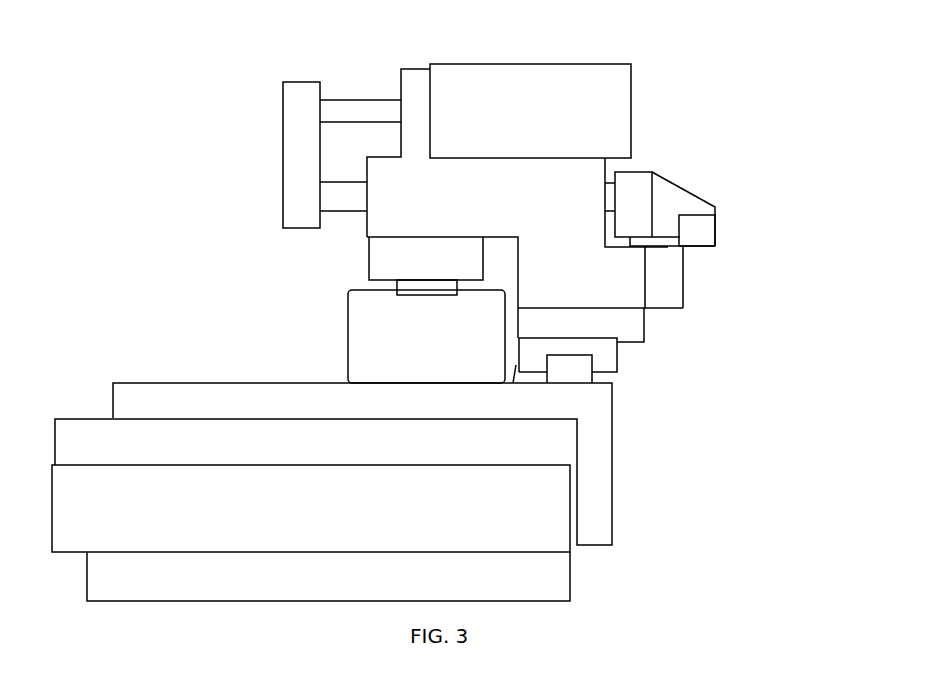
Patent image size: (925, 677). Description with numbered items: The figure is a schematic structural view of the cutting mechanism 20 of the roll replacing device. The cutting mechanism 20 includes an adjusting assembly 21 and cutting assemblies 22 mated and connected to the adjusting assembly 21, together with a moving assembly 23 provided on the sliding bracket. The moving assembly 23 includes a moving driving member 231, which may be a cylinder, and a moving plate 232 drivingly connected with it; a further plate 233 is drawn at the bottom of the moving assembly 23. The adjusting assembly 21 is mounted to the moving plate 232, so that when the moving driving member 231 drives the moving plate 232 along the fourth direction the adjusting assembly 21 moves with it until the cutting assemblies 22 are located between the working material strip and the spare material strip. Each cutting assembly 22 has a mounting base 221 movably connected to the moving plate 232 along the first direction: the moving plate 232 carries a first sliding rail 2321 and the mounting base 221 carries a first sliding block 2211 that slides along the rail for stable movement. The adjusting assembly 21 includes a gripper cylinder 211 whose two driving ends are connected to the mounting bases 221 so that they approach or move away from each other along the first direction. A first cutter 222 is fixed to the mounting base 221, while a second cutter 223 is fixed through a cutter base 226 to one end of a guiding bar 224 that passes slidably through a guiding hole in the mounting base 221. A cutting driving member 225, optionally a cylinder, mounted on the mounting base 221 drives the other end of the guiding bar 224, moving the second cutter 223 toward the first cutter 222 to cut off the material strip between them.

The cutting mechanism 20 is at (134, 84).
The adjusting assembly 21 is at (337, 307).
The gripper cylinder 211 is at (363, 330).
The cutting assembly 22 is at (645, 139).
The mounting base 221 is at (613, 291).
The first sliding block 2211 is at (603, 352).
The first cutter 222 is at (678, 278).
The second cutter 223 is at (700, 244).
The guiding bar 224 is at (607, 195).
The cutting driving member 225 is at (612, 92).
The cutter base 226 is at (672, 202).
The moving assembly 23 is at (615, 472).
The moving driving member 231 is at (548, 513).
The moving plate 232 is at (580, 402).
The first sliding rail 2321 is at (580, 375).
The bottom plate 233 is at (556, 580).